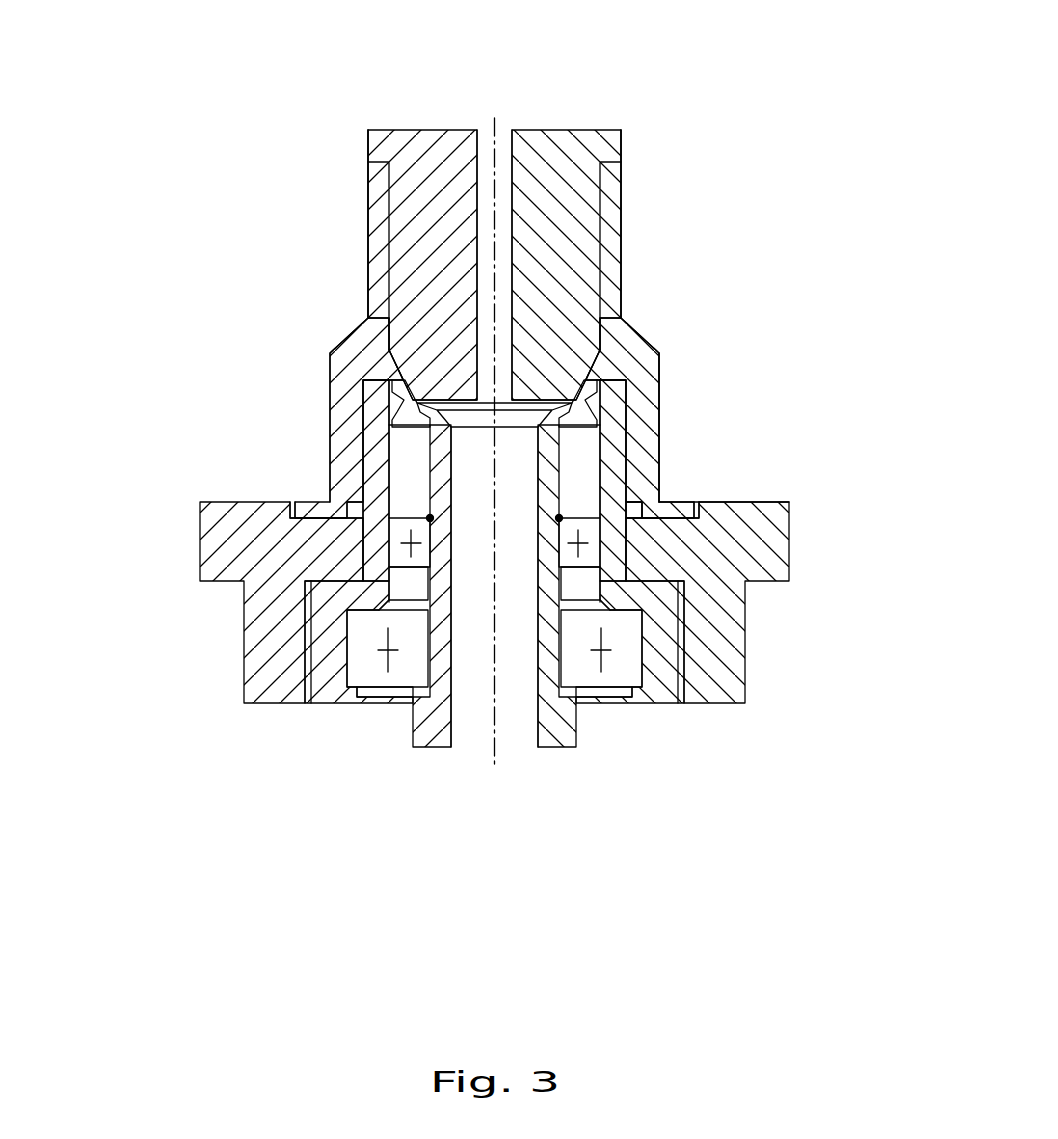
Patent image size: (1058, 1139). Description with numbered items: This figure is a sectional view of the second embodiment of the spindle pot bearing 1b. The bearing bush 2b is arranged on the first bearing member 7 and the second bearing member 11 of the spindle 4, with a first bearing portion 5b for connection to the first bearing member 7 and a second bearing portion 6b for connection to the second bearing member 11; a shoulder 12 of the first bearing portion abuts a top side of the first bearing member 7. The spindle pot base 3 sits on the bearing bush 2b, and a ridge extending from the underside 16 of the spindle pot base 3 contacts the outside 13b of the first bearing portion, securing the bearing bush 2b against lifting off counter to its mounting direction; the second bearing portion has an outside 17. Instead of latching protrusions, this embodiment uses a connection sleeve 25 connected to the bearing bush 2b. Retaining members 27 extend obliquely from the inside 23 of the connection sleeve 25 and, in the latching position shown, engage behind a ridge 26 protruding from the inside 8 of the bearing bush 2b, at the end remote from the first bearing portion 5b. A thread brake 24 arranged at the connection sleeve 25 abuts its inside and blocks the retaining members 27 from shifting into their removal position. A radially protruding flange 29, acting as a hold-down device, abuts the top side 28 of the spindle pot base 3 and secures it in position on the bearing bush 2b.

The spindle pot bearing 1b is at (783, 128).
The bearing bush 2b is at (603, 480).
The spindle pot base 3 is at (745, 530).
The spindle 4 is at (566, 722).
The first bearing portion 5b is at (695, 670).
The second bearing portion 6b is at (642, 438).
The first bearing member 7 is at (623, 668).
The inside of bearing bush 8 is at (347, 675).
The second bearing member 11 is at (400, 530).
The shoulder 12 is at (655, 602).
The outside of first bearing portion 13b is at (693, 642).
The underside of spindle pot base 16 is at (390, 565).
The outside of second bearing portion 17 is at (363, 473).
The inside of connection sleeve 23 is at (389, 214).
The thread brake 24 is at (552, 178).
The connection sleeve 25 is at (612, 212).
The ridge 26 is at (405, 390).
The retaining member 27 is at (573, 415).
The top side of spindle pot base 28 is at (675, 507).
The hold-down flange 29 is at (700, 500).